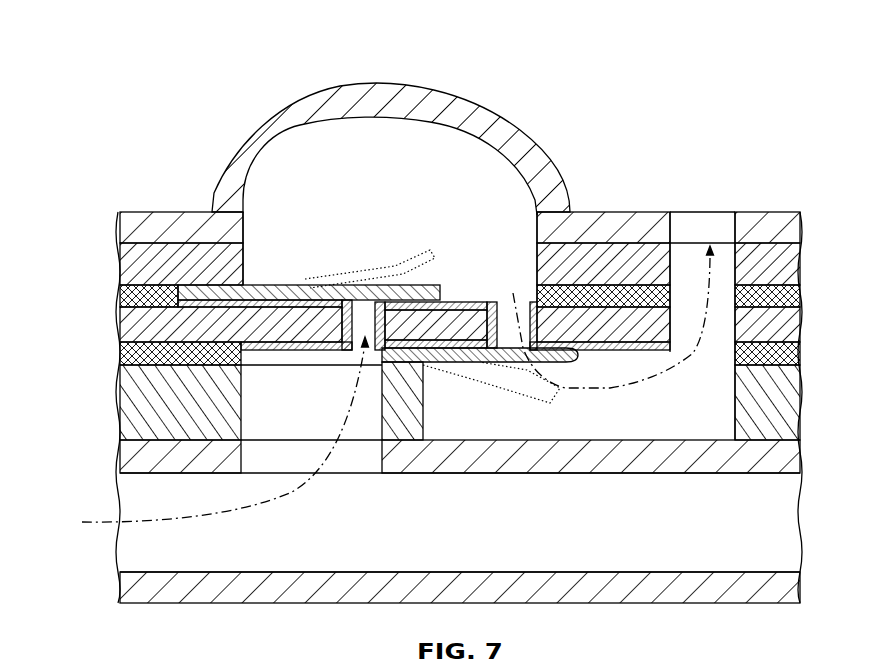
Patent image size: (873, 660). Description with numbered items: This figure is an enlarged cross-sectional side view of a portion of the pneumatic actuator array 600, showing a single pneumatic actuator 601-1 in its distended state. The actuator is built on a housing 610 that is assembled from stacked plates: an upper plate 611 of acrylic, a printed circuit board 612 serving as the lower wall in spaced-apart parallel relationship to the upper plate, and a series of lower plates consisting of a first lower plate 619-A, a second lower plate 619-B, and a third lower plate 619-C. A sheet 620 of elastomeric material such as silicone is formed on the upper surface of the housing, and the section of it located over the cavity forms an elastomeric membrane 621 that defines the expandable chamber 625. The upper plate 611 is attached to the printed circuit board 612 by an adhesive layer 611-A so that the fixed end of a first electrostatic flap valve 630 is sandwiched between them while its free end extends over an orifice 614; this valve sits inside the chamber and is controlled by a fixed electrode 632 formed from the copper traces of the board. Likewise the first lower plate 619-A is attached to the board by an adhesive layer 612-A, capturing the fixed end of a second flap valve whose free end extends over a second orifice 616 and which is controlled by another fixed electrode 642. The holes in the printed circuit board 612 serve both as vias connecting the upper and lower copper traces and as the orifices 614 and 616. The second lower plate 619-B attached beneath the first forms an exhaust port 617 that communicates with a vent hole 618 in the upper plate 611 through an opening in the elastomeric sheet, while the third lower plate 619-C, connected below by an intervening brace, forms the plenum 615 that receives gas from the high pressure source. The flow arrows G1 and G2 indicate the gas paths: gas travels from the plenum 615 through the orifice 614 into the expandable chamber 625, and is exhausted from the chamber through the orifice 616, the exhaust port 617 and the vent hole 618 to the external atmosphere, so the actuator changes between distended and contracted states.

The pneumatic actuator array 600 is at (152, 40).
The pneumatic actuator 601-1 is at (432, 149).
The housing 610 is at (69, 246).
The upper plate 611 is at (118, 263).
The adhesive layer 611-A is at (118, 292).
The printed circuit board 612 is at (118, 326).
The adhesive layer 612-A is at (118, 354).
The orifice 614 is at (352, 358).
The plenum 615 is at (546, 526).
The orifice 616 is at (495, 291).
The exhaust port 617 is at (673, 414).
The vent hole 618 is at (710, 219).
The first lower plate 619-A is at (118, 420).
The second lower plate 619-B is at (123, 453).
The third lower plate 619-C is at (118, 585).
The elastomeric sheet 620 is at (170, 203).
The elastomeric membrane 621 is at (264, 134).
The expandable chamber 625 is at (393, 168).
The first electrostatic flap valve 630 is at (414, 262).
The fixed electrode 632 is at (371, 296).
The fixed electrode 642 is at (577, 358).
The gas flow path 1 G1 is at (225, 429).
The gas flow path 2 G2 is at (618, 317).